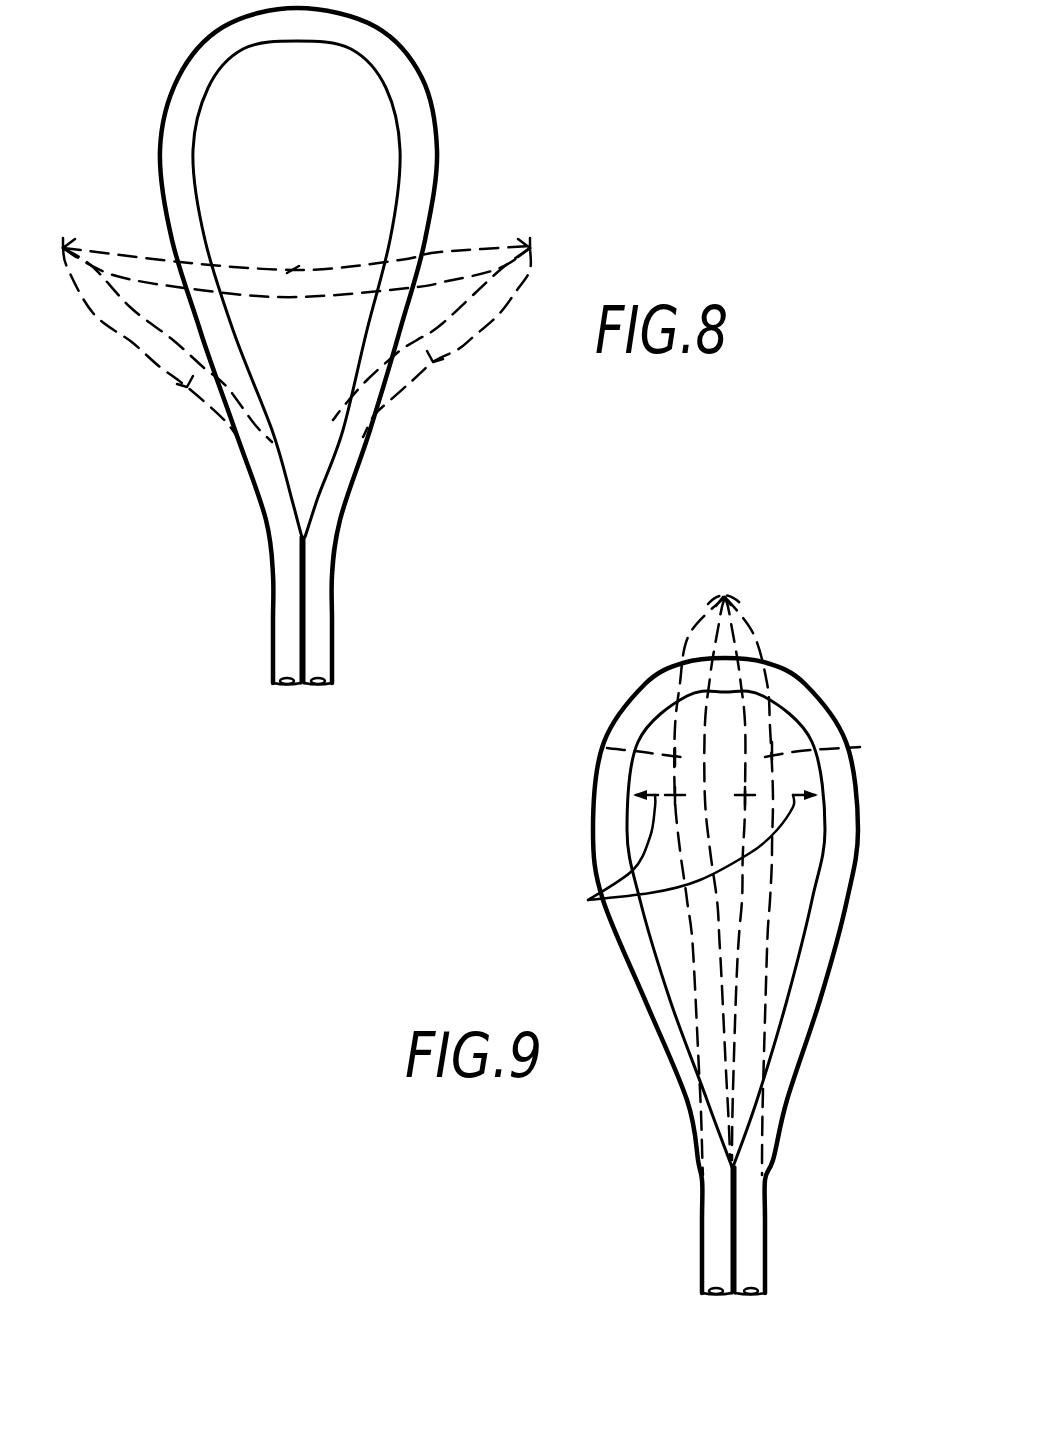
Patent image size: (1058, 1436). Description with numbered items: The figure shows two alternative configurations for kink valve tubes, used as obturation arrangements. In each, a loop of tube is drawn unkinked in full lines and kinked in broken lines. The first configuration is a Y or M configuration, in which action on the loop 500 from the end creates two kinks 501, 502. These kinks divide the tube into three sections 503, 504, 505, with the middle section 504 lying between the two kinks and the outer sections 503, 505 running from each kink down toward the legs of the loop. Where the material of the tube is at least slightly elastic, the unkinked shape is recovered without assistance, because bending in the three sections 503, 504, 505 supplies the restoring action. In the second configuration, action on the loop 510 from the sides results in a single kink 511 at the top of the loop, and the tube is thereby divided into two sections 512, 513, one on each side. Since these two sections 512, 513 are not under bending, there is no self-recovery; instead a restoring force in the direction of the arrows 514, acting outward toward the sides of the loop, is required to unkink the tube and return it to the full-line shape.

In FIG. 8, the loop 500 is at (408, 98).
In FIG. 8, the kink 501 is at (66, 244).
In FIG. 8, the kink 502 is at (530, 246).
In FIG. 8, the section 503 is at (183, 400).
In FIG. 8, the section 504 is at (293, 280).
In FIG. 8, the section 505 is at (440, 370).
In FIG. 9, the loop 510 is at (807, 707).
In FIG. 9, the kink 511 is at (723, 597).
In FIG. 9, the section 512 is at (607, 748).
In FIG. 9, the section 513 is at (862, 747).
In FIG. 9, the arrows 514 is at (588, 900).